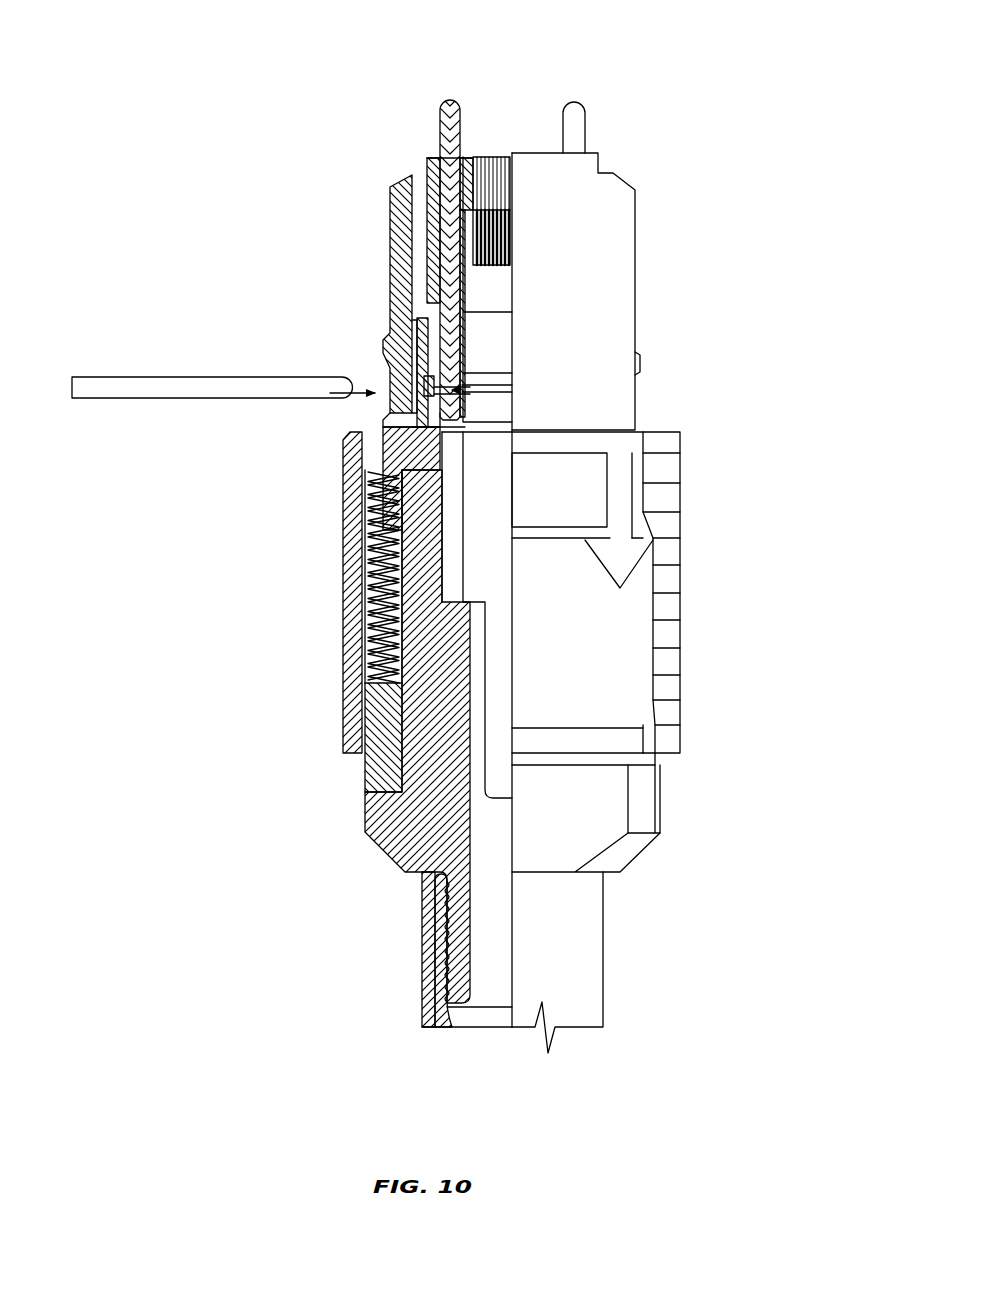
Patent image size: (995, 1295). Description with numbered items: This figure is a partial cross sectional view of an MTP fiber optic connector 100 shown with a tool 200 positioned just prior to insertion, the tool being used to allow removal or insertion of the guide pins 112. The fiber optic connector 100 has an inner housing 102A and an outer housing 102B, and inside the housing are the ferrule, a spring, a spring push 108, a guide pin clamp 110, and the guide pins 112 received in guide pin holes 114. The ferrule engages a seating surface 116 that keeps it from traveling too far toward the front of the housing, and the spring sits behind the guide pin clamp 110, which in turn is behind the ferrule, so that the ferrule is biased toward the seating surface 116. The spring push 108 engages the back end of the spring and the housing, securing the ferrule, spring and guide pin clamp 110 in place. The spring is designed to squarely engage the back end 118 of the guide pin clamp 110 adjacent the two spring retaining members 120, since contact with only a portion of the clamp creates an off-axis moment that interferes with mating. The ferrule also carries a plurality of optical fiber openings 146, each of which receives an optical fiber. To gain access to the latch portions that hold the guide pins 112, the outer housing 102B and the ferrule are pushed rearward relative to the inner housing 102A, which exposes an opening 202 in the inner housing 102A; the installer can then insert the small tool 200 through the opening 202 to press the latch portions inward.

The fiber optic connector 100 is at (716, 98).
The inner housing 102A is at (635, 262).
The outer housing 102B is at (682, 488).
The spring push 108 is at (365, 832).
The guide pin clamp 110 is at (390, 425).
The guide pins 112 is at (440, 127).
The guide pin holes 114 is at (400, 385).
The seating surface 116 is at (390, 310).
The back end of the guide pin clamp 118 is at (470, 392).
The spring retaining members 120 is at (355, 478).
The optical fiber openings 146 is at (427, 170).
The tool 200 is at (120, 375).
The opening 202 is at (345, 395).